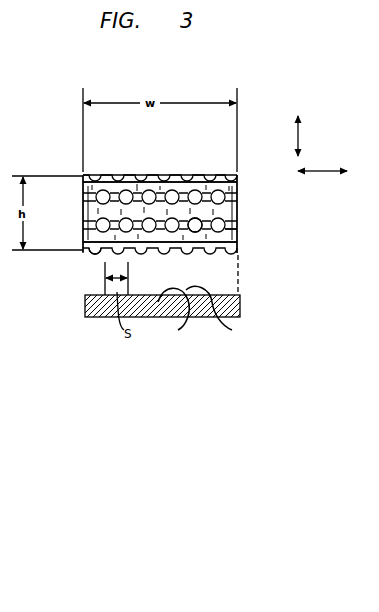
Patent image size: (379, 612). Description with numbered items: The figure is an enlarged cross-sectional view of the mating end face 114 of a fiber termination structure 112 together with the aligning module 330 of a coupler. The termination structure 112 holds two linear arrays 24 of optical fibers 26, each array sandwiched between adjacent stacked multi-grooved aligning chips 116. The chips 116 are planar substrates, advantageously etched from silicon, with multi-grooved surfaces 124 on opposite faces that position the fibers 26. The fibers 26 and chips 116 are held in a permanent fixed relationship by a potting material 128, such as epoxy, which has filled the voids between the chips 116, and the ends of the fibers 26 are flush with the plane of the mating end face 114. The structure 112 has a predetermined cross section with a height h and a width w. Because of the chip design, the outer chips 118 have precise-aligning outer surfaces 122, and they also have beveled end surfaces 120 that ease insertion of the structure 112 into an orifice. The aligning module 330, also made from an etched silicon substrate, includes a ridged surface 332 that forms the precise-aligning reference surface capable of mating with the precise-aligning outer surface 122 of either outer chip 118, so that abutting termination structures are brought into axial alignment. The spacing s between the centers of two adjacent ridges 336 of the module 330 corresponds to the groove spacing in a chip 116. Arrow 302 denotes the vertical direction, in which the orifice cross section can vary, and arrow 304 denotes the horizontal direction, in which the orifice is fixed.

The fiber termination structure 112 is at (234, 272).
The mating end face 114 is at (83, 175).
The multi-grooved aligning chips 116 is at (83, 243).
The outer chips 118 is at (85, 177).
The beveled end surfaces 120 is at (228, 177).
The precise-aligning outer surfaces 122 is at (137, 178).
The multi-grooved surfaces 124 is at (103, 255).
The linear arrays 24 is at (243, 231).
The optical fibers 26 is at (196, 228).
The potting material 128 is at (240, 235).
The arrow 302 is at (300, 132).
The arrow 304 is at (304, 173).
The aligning module 330 is at (242, 302).
The ridged surface 332 is at (178, 330).
The ridges 336 is at (232, 330).